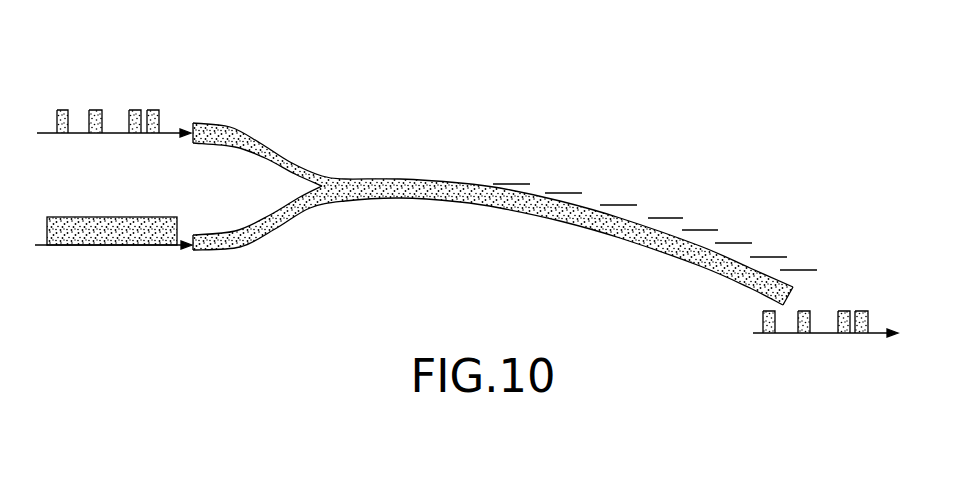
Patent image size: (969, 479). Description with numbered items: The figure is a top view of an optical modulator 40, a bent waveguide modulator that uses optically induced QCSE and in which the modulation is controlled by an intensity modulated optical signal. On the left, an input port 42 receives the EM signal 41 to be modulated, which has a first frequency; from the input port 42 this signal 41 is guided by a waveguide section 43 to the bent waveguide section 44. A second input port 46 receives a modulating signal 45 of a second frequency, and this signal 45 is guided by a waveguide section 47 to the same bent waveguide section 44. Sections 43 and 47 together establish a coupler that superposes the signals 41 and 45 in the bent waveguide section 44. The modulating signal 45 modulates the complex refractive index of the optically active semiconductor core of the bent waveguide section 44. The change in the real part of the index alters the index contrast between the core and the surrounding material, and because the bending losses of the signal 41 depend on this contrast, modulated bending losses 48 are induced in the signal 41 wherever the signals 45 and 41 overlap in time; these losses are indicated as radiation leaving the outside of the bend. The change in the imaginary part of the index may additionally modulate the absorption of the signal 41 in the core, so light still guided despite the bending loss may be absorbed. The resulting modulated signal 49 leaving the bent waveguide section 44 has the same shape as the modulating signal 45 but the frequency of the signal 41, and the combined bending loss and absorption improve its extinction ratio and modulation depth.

The optical modulator 40 is at (528, 135).
The EM signal 41 is at (83, 247).
The input port 42 is at (187, 252).
The waveguide section 43 is at (288, 223).
The bent waveguide section 44 is at (565, 223).
The modulating signal 45 is at (78, 115).
The input port 46 is at (188, 131).
The waveguide section 47 is at (269, 139).
The modulated bending losses 48 is at (735, 242).
The modulated signal 49 is at (820, 328).